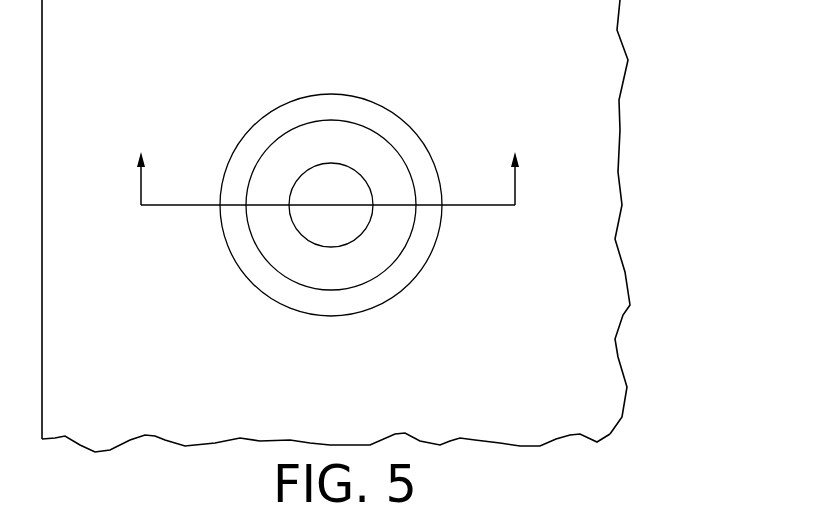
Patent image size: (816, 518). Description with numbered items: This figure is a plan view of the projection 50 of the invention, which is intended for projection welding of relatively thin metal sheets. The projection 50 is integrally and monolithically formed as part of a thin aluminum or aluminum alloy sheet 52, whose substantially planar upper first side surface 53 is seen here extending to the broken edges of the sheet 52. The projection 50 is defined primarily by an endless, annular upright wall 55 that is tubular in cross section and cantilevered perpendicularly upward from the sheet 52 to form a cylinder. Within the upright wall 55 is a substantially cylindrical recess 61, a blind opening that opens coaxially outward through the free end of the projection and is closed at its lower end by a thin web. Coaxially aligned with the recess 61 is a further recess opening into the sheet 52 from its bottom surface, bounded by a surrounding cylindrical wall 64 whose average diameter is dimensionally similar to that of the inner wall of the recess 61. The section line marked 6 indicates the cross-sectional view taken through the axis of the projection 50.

The projection 50 is at (333, 167).
The sheet 52 is at (626, 239).
The first side surface 53 is at (597, 334).
The upright wall 55 is at (283, 150).
The recess 61 is at (321, 162).
The cylindrical wall 64 is at (413, 153).
The section line 6- 6 is at (327, 158).